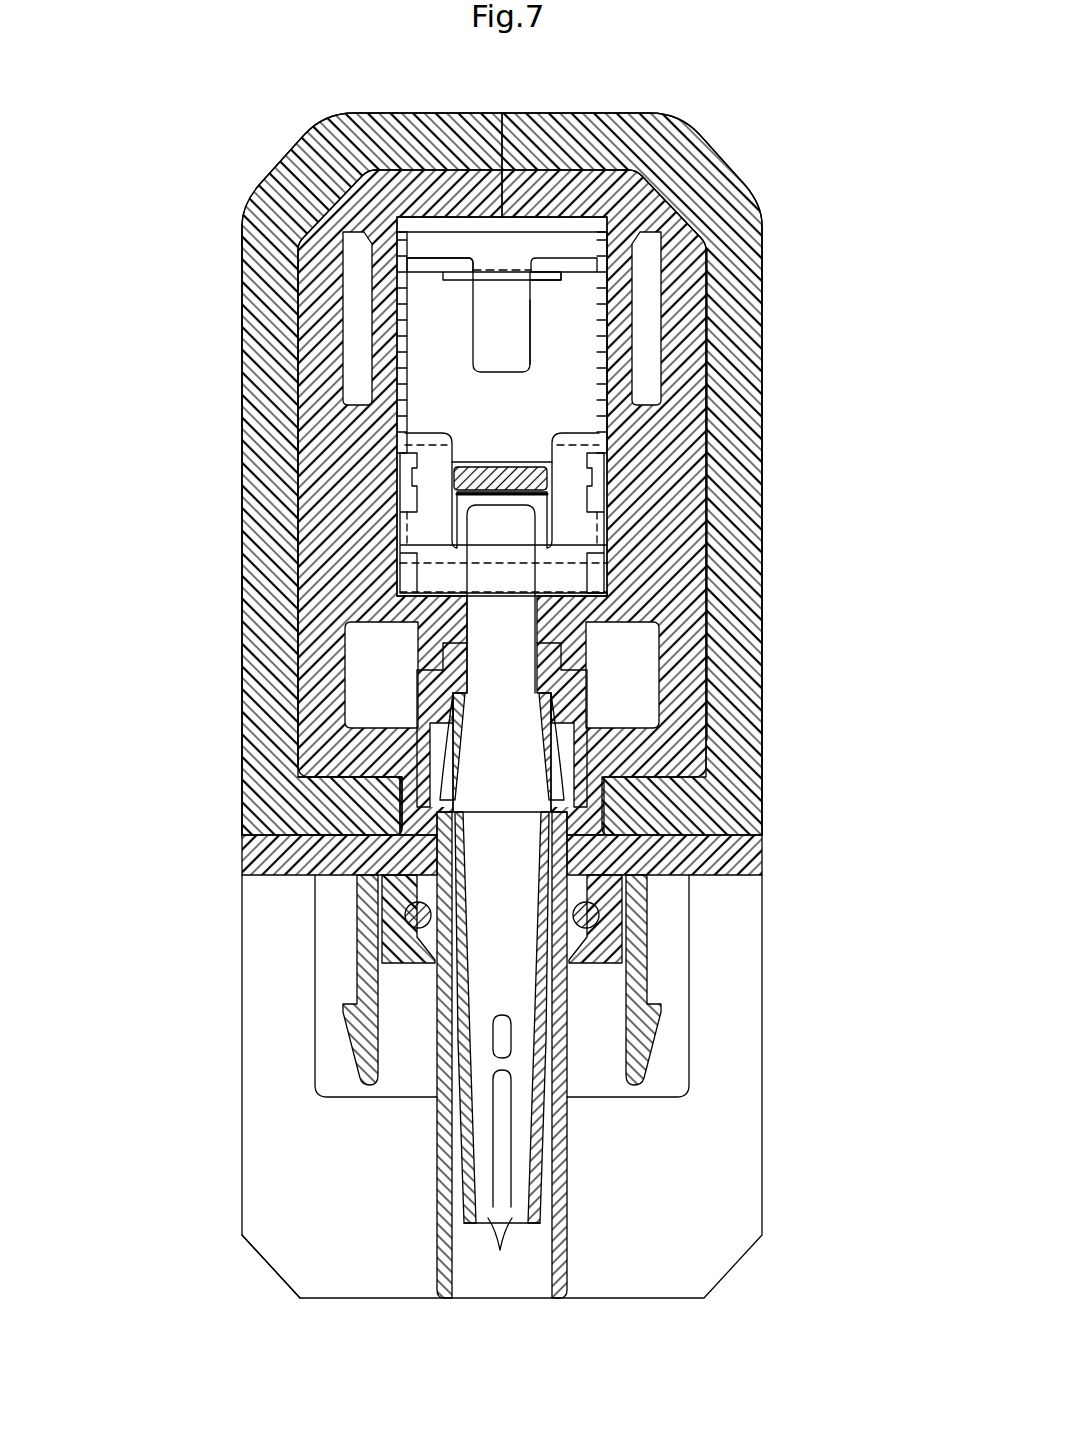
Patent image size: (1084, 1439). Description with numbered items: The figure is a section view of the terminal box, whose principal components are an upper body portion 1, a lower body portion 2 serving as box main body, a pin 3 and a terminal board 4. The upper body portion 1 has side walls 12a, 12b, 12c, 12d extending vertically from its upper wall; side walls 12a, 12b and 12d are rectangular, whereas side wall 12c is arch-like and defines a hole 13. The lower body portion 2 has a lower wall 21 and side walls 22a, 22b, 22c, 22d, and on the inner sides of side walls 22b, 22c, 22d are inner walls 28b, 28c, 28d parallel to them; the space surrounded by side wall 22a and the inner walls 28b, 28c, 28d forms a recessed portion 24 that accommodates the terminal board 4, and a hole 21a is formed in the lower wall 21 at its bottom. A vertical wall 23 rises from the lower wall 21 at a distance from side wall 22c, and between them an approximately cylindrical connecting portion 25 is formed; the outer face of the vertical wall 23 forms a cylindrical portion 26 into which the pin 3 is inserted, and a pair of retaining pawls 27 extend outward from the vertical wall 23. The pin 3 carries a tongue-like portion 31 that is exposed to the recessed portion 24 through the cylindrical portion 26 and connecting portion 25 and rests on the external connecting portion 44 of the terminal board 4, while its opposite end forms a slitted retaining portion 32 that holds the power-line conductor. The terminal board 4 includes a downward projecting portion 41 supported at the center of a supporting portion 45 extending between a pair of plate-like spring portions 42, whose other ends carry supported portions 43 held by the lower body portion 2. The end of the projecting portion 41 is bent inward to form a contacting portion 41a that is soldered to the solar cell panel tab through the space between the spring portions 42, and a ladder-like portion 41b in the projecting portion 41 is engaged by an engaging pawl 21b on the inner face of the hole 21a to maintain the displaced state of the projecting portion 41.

The upper body portion 1 is at (268, 170).
The lower body portion 2 is at (240, 1155).
The pin 3 is at (541, 1120).
The terminal board 4 is at (502, 230).
The side wall 12a is at (556, 128).
The side wall 12b is at (250, 530).
The side wall 12c is at (342, 820).
The side wall 12d is at (757, 510).
The hole 13 is at (584, 800).
The lower wall 21 is at (748, 1110).
The hole 21a is at (570, 375).
The engaging pawl 21b is at (504, 284).
The side wall 22a is at (462, 168).
The side wall 22b is at (315, 356).
The side wall 22c is at (385, 725).
The side wall 22d is at (700, 440).
The vertical wall 23 is at (255, 855).
The recessed portion 24 is at (521, 426).
The connecting portion 25 is at (397, 800).
The cylindrical portion 26 is at (569, 1245).
The retaining pawls 27 is at (372, 1040).
The inner wall 28b is at (370, 300).
The inner wall 28c is at (650, 640).
The inner wall 28d is at (630, 290).
The tongue-like portion 31 is at (522, 632).
The retaining portion 32 is at (500, 1151).
The projecting portion 41 is at (470, 376).
The contacting portion 41a is at (523, 368).
The ladder-like portion 41b is at (543, 282).
The spring portions 42 is at (400, 410).
The supported portions 43 is at (410, 530).
The external connecting portion 44 is at (460, 530).
The supporting portion 45 is at (437, 240).